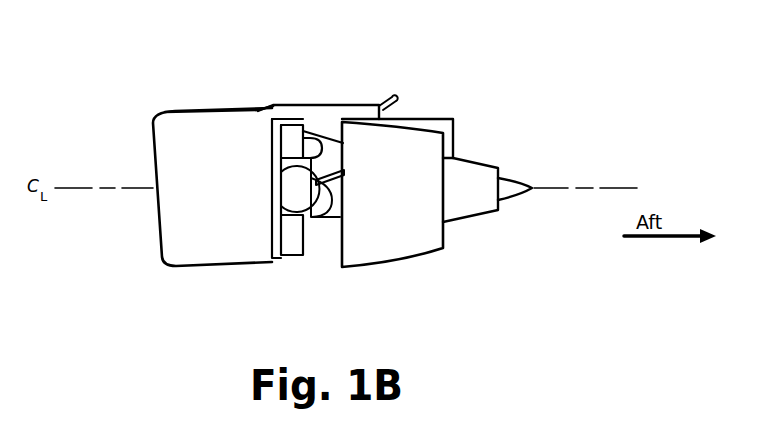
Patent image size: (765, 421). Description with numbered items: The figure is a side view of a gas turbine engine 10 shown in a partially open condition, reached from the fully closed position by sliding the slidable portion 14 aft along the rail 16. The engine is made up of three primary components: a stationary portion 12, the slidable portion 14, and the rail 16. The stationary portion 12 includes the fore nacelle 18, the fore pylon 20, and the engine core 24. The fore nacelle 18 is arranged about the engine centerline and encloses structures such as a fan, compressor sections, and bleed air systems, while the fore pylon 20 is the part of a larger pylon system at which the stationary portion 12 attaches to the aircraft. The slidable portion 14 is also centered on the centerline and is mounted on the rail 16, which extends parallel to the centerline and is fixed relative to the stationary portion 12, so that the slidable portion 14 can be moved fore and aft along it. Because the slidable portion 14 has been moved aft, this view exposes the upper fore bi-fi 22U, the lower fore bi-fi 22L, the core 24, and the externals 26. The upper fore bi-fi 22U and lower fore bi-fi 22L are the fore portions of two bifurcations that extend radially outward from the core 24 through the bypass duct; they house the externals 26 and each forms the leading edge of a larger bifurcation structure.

The gas turbine engine 10 is at (526, 97).
The stationary portion 12 is at (152, 158).
The slidable portion 14 is at (432, 269).
The rail 16 is at (338, 117).
The fore nacelle 18 is at (209, 103).
The fore pylon 20 is at (328, 71).
The upper fore bi-fi 22U is at (281, 148).
The lower fore bi-fi 22L is at (291, 248).
The engine core 24 is at (316, 218).
The externals 26 is at (328, 186).